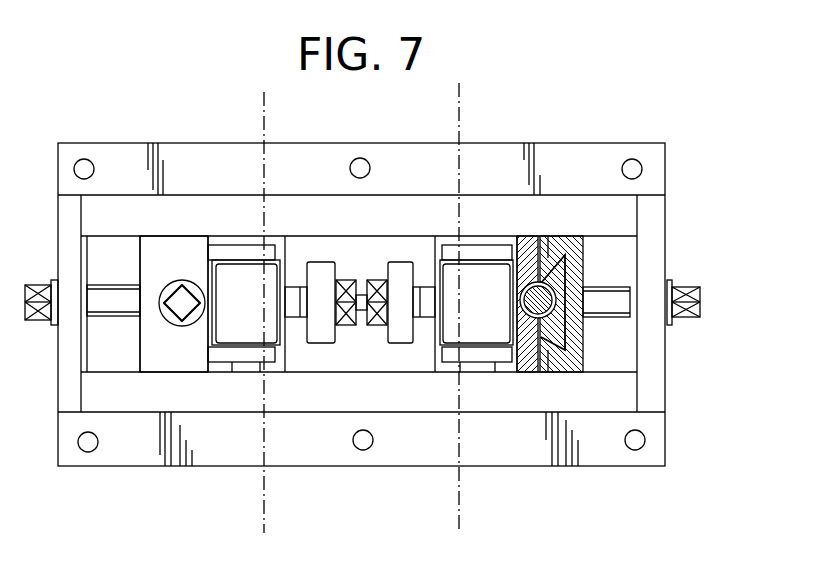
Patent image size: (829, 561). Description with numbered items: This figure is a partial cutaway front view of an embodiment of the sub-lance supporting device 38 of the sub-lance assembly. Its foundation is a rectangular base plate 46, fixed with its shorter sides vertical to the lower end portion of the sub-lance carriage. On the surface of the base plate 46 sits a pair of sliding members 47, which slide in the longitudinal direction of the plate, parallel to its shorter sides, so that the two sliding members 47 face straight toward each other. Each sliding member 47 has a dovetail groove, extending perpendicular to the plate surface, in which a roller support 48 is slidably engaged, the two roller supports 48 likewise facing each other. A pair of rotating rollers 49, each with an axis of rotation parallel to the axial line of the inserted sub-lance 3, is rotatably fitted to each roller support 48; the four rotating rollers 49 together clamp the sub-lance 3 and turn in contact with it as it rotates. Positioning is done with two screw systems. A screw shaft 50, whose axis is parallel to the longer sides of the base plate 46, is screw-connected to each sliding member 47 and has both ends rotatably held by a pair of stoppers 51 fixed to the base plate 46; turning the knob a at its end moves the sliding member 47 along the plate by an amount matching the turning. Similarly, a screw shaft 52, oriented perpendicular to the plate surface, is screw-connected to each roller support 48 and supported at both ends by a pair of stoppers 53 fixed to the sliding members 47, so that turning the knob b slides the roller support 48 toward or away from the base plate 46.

The sub-lance 3 is at (262, 512).
The roller assembly 38 is at (537, 473).
The base plate 46 is at (293, 458).
The sliding member 47 is at (583, 258).
The roller support 48 is at (530, 363).
The rotating roller 49 is at (277, 333).
The screw shaft 50 is at (117, 312).
The stopper 51 is at (320, 262).
The screw shaft 52 is at (532, 285).
The stopper 53 is at (174, 318).
The knob a is at (35, 320).
The knob b is at (182, 287).